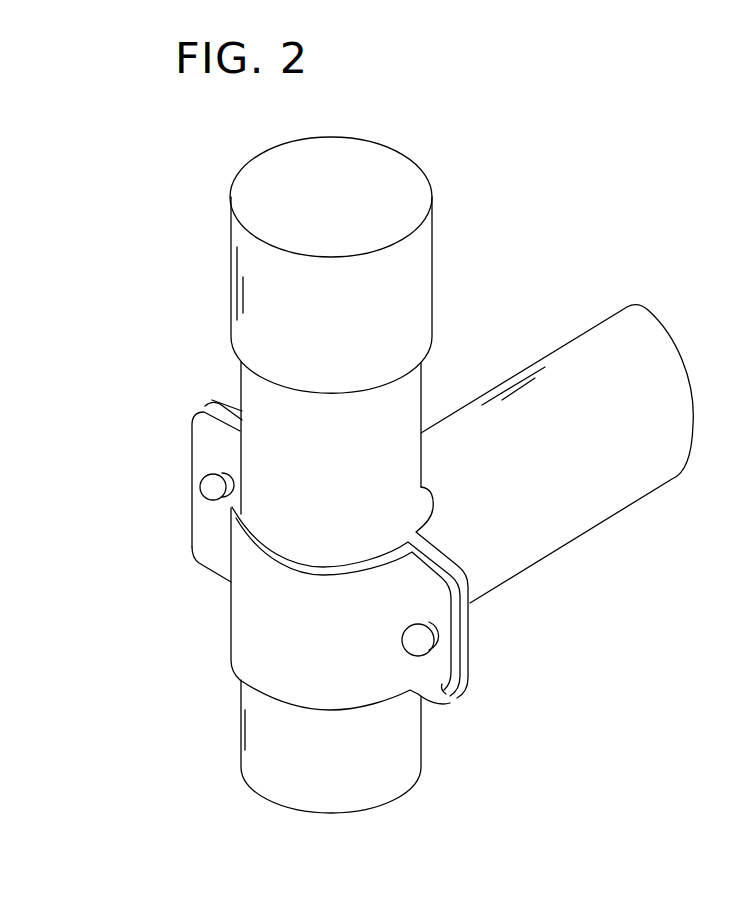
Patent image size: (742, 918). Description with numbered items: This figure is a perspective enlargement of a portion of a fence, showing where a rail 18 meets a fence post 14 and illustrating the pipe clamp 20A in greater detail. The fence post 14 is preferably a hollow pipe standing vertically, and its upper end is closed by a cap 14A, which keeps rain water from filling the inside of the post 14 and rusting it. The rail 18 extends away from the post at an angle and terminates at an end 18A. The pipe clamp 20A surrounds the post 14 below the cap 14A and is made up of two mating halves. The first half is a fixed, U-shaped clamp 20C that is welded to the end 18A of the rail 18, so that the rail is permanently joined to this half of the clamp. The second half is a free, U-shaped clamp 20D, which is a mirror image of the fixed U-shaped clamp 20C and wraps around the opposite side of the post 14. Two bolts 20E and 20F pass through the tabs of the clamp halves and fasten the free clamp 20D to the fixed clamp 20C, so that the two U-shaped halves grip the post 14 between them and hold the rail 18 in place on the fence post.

The fence post 14 is at (423, 750).
The cap 14A is at (397, 148).
The rail 18 is at (655, 490).
The end of rail 18A is at (452, 413).
The pipe clamp 20A is at (175, 667).
The fixed U-shaped clamp 20C is at (472, 655).
The free U-shaped clamp 20D is at (522, 745).
The bolt 20E is at (207, 488).
The bolt 20F is at (418, 632).